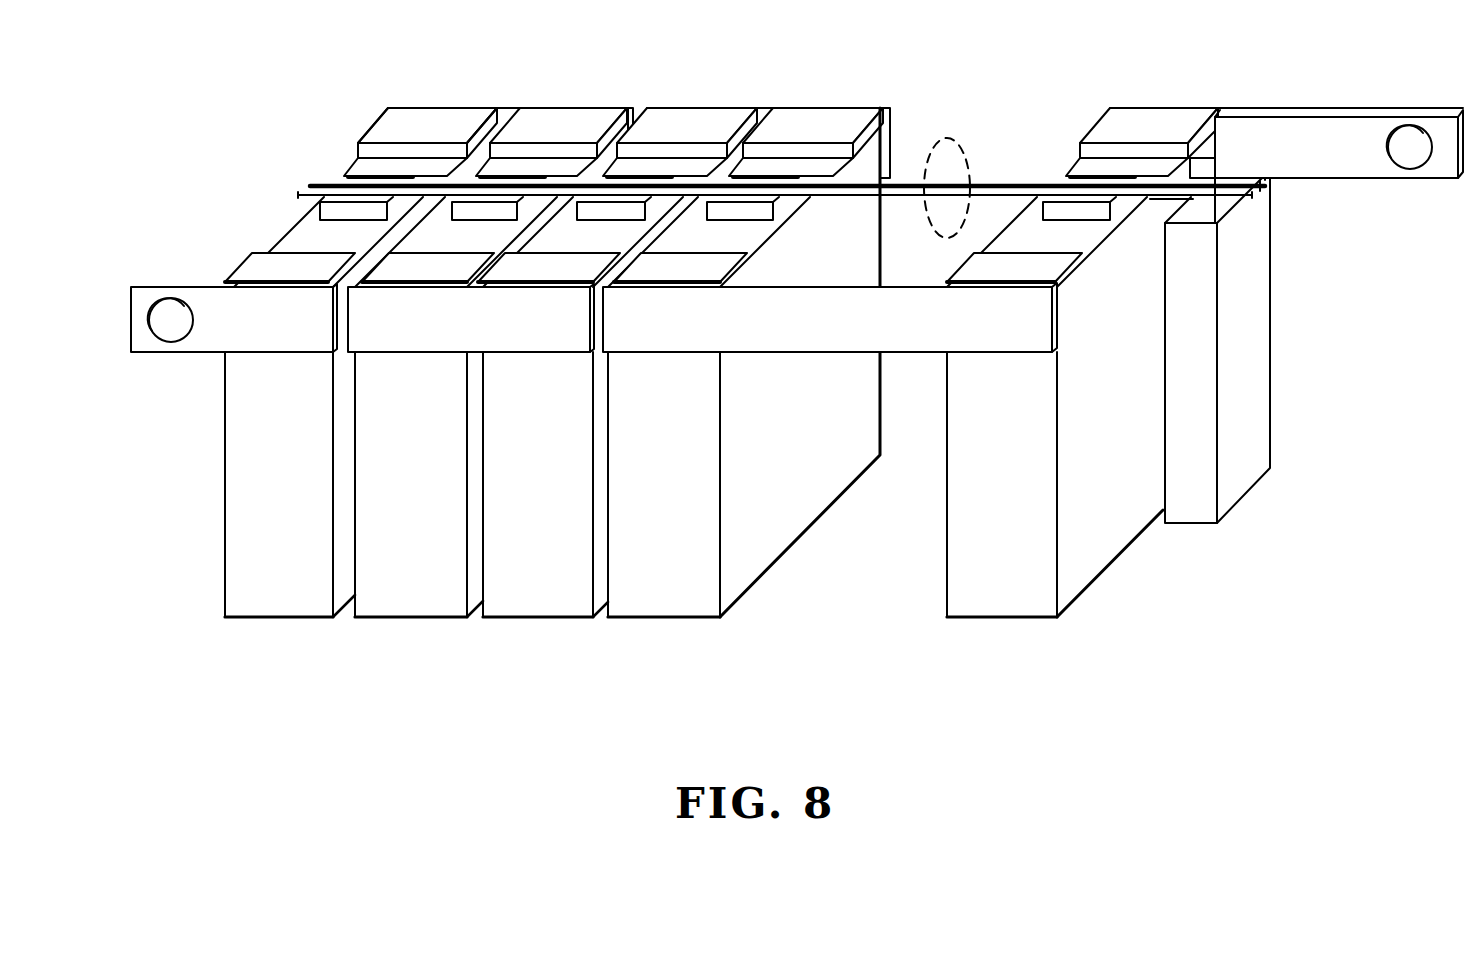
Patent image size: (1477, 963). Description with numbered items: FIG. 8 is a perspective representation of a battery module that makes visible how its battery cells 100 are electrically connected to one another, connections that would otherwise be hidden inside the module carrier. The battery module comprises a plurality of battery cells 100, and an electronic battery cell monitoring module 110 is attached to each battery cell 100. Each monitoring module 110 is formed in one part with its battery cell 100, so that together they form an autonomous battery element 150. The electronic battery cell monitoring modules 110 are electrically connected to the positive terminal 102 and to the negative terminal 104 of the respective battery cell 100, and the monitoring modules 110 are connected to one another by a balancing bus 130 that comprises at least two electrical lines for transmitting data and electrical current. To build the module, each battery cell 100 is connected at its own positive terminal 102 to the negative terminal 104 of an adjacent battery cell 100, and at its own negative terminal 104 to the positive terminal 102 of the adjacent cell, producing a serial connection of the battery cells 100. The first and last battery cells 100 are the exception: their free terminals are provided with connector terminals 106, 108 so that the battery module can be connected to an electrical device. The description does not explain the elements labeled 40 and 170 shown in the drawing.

The battery cell 40 is at (508, 113).
The battery cell 100 is at (300, 235).
The positive terminal 102 is at (400, 125).
The negative terminal 104 is at (245, 267).
The connector terminal 106 is at (1375, 147).
The connector terminal 108 is at (230, 315).
The electronic battery cell monitoring module 110 is at (340, 210).
The balancing bus 130 is at (957, 142).
The autonomous battery element 150 is at (263, 538).
The end plate 170 is at (1245, 452).